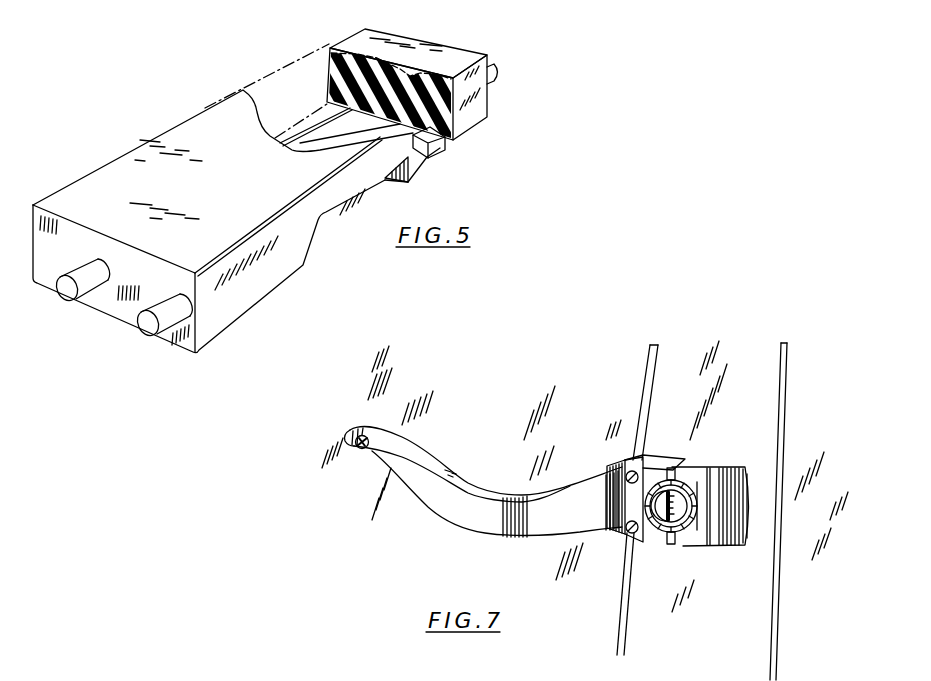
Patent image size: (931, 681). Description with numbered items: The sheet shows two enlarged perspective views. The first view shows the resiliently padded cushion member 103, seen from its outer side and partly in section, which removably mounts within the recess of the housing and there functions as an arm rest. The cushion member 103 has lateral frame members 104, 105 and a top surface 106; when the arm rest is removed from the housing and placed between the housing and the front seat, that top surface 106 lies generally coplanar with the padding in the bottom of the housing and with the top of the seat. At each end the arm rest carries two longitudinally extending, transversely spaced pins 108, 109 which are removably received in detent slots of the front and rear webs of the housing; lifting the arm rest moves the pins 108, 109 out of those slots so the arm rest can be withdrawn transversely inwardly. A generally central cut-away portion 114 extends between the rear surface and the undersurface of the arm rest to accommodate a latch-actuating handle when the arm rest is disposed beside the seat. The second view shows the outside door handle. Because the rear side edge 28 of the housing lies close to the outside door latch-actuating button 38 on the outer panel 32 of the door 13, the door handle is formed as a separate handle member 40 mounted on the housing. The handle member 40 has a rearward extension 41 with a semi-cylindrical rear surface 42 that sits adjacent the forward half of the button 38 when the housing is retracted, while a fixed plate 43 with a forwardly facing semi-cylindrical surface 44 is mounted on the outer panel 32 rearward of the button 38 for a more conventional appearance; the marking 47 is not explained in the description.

In FIG. 5, the cushion member 103 is at (157, 130).
In FIG. 5, the lateral frame member 104 is at (430, 150).
In FIG. 5, the lateral frame member 105 is at (302, 128).
In FIG. 5, the top surface 106 is at (427, 50).
In FIG. 5, the pin 108 is at (497, 80).
In FIG. 5, the pin 109 is at (70, 294).
In FIG. 5, the central cut-away portion 114 is at (362, 193).
In FIG. 7, the rear side edge of the housing 28 is at (656, 375).
In FIG. 7, the handle member 40 is at (437, 500).
In FIG. 7, the rearward extension 41 is at (664, 462).
In FIG. 7, the semi-cylindrical rear surface 42 is at (658, 528).
In FIG. 7, the fixed plate 43 is at (735, 488).
In FIG. 7, the forwardly facing semi-cylindrical surface 44 is at (683, 493).
In FIG. 7, the outside door latch-actuating button 38 is at (678, 511).
In FIG. 7, the section line 47 is at (342, 567).
In FIG. 7, the door 13 is at (490, 567).
In FIG. 7, the outer panel of the door 32 is at (730, 582).